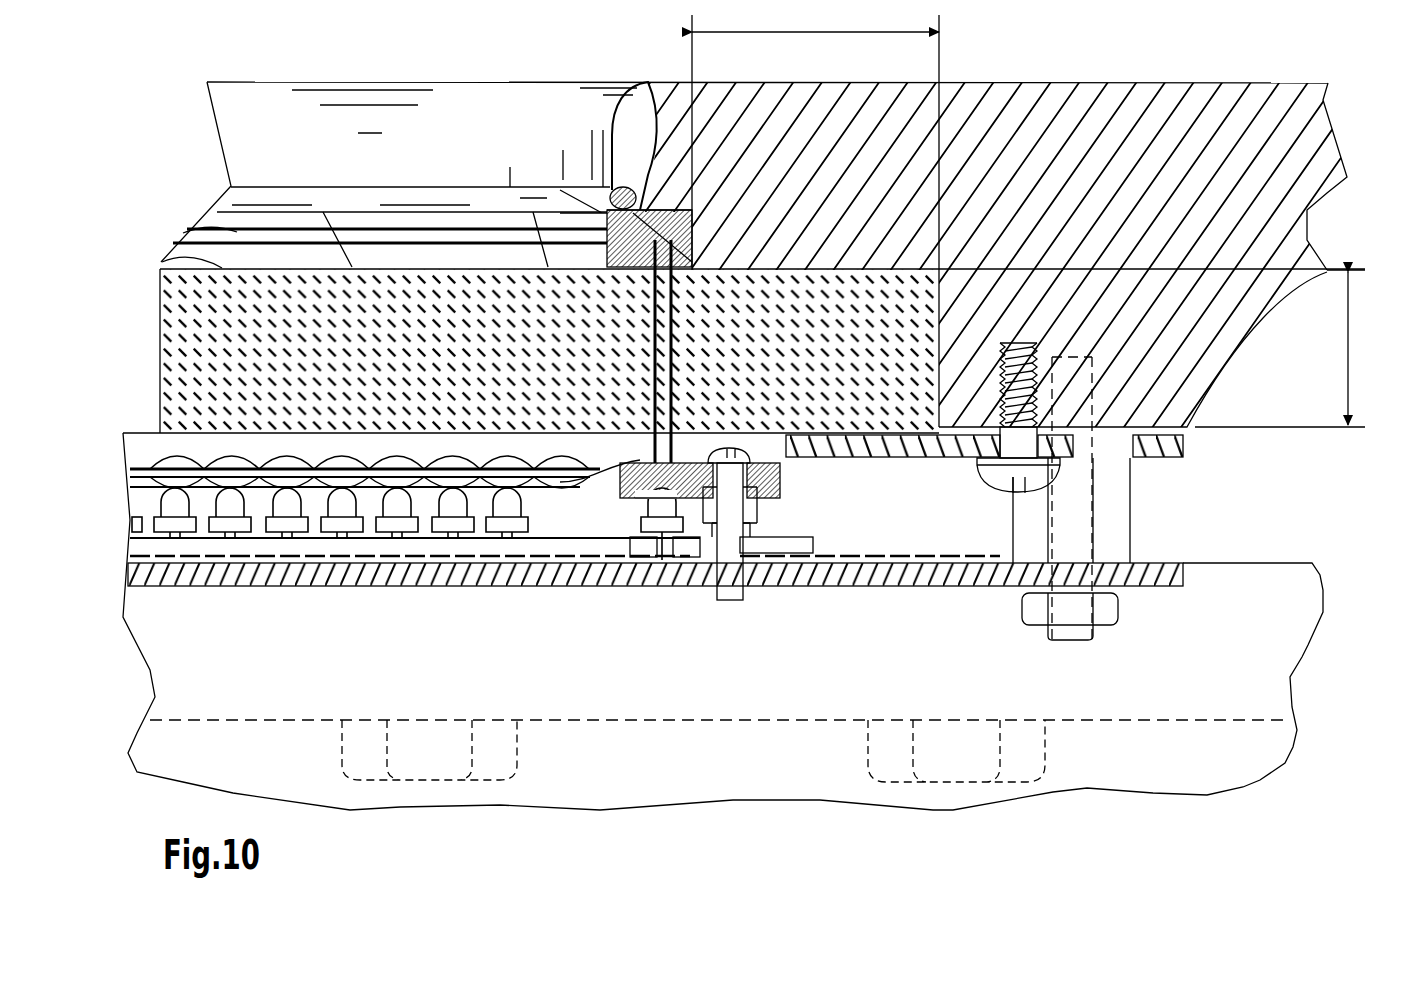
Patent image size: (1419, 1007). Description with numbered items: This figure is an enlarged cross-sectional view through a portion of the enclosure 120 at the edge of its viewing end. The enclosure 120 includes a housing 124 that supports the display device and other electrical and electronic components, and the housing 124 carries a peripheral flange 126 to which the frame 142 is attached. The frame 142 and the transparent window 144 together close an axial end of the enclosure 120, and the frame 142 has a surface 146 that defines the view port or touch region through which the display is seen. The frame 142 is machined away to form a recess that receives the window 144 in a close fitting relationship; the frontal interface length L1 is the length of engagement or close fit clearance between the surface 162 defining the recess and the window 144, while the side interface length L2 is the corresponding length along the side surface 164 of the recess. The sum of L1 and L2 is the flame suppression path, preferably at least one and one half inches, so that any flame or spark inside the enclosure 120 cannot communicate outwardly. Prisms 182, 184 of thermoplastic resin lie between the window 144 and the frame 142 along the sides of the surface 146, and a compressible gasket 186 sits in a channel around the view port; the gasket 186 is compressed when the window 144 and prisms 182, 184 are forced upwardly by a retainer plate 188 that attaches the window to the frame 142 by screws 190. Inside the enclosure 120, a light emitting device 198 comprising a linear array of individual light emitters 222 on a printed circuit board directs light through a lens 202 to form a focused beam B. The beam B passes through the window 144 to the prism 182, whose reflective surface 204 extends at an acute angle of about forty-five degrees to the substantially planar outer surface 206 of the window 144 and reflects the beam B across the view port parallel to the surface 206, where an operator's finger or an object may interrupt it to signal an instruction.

The enclosure 120 is at (789, 220).
The housing 124 is at (1250, 757).
The peripheral flange 126 is at (1245, 720).
The frame 142 is at (874, 131).
The transparent window 144 is at (233, 345).
The surface defining the view port 146 is at (607, 160).
The surface defining the recess 162 is at (648, 322).
The side surface of the recess 164 is at (940, 292).
The prism 182 is at (604, 228).
The prism 184 is at (348, 222).
The gasket 186 is at (637, 82).
The retainer plate 188 is at (870, 455).
The screws 190 is at (1010, 447).
The light emitting device 198 is at (635, 506).
The lens 202 is at (652, 460).
The reflective surface 204 is at (693, 262).
The planar outer surface 206 is at (163, 258).
The light emitters 222 is at (511, 500).
The beam of light B is at (187, 234).
The frontal interface length L1 is at (778, 22).
The side interface length L2 is at (1348, 338).